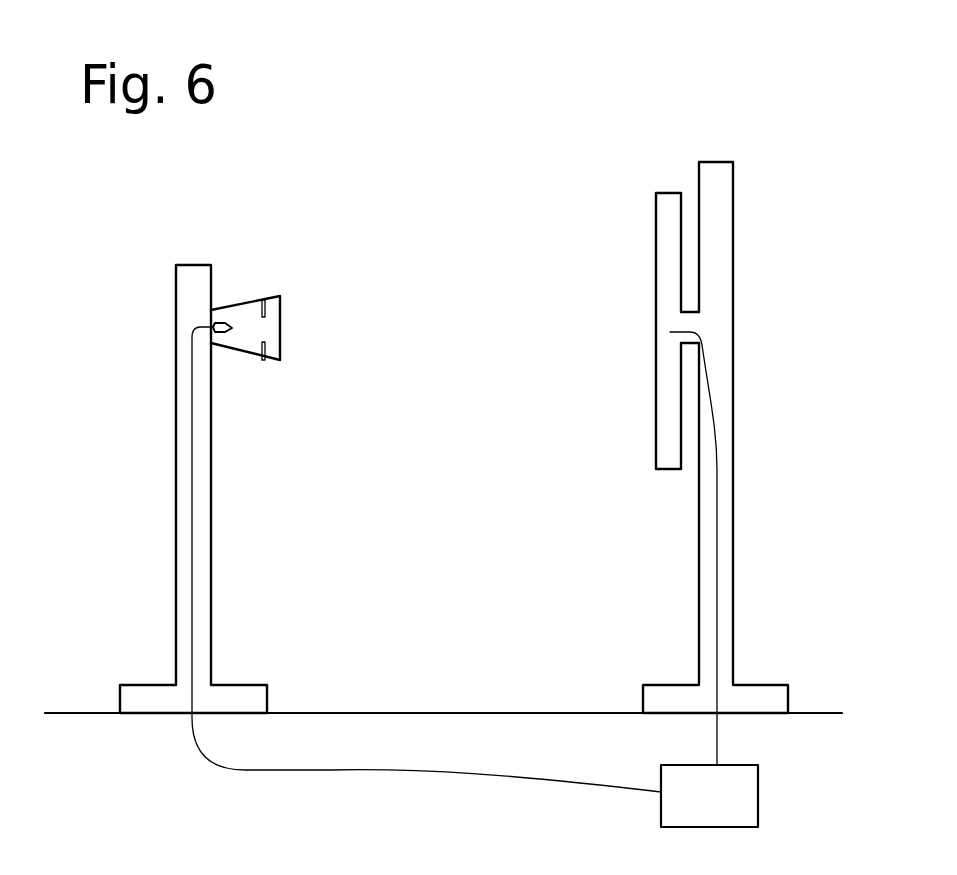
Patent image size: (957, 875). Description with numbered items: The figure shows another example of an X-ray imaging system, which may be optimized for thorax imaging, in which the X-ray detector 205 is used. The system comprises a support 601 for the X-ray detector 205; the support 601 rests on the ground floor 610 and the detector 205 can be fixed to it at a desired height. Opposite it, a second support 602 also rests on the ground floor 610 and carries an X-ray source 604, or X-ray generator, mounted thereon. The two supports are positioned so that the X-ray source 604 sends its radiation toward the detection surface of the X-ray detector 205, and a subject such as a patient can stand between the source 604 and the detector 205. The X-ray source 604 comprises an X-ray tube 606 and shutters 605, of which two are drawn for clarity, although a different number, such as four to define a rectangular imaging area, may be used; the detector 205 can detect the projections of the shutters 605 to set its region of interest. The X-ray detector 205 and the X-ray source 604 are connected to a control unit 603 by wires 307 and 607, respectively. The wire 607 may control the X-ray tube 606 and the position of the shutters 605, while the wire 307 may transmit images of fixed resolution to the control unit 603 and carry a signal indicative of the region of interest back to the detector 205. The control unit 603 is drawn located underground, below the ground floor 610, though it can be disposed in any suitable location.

The X-ray detector 205 is at (668, 200).
The wire 307 is at (733, 450).
The support 601 is at (733, 572).
The support 602 is at (211, 625).
The control unit 603 is at (689, 808).
The X-ray source 604 is at (237, 310).
The shutters 605 is at (267, 302).
The X-ray tube 606 is at (227, 347).
The wire 607 is at (310, 770).
The ground floor 610 is at (821, 713).